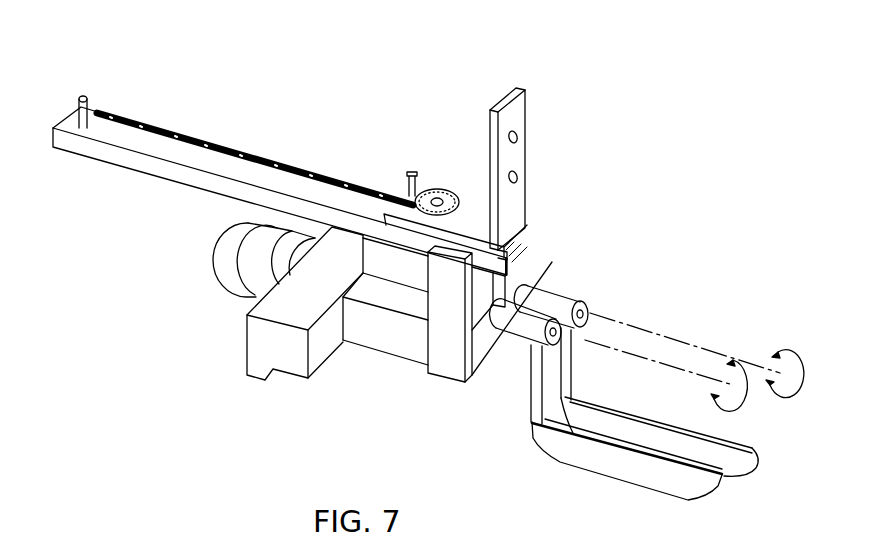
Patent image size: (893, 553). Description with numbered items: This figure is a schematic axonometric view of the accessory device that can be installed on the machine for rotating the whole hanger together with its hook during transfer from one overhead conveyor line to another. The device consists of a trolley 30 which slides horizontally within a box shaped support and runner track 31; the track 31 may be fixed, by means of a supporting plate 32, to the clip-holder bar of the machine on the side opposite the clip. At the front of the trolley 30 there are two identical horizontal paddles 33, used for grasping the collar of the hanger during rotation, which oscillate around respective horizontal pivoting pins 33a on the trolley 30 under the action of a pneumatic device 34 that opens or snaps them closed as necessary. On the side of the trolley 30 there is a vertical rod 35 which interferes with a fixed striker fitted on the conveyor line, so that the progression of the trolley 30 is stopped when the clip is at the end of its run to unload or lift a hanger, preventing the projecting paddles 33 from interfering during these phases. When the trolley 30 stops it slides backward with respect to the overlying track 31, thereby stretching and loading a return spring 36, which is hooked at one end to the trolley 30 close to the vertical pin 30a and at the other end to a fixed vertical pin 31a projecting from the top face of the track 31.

The trolley 30 is at (382, 340).
The vertical pin 30a is at (413, 178).
The box shaped support and runner track 31 is at (160, 172).
The fixed vertical pin 31a is at (88, 98).
The supporting plate 32 is at (515, 153).
The horizontal paddles 33 is at (822, 458).
The horizontal pivoting pins 33a is at (610, 210).
The pneumatic device 34 is at (228, 283).
The vertical rod 35 is at (445, 363).
The return spring 36 is at (295, 168).